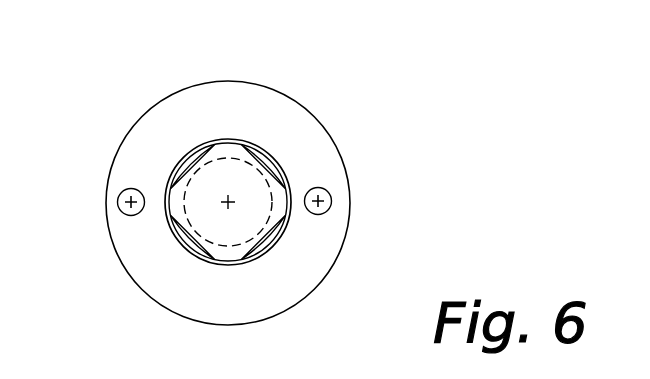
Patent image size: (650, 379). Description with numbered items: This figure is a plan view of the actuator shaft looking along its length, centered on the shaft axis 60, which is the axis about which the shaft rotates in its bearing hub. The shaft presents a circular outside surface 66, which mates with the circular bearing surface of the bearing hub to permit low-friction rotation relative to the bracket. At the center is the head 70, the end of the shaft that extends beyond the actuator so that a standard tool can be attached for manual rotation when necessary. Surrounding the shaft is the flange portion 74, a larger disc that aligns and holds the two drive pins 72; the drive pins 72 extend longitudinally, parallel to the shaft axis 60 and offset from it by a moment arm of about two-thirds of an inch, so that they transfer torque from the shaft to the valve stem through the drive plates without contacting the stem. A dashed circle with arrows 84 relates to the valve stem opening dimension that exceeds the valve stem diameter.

The shaft axis 60 is at (226, 201).
The circular outside surface 66 is at (257, 258).
The head 70 is at (189, 158).
The drive pins 72 is at (121, 212).
The flange portion 74 is at (208, 93).
The arrows 84 is at (272, 200).